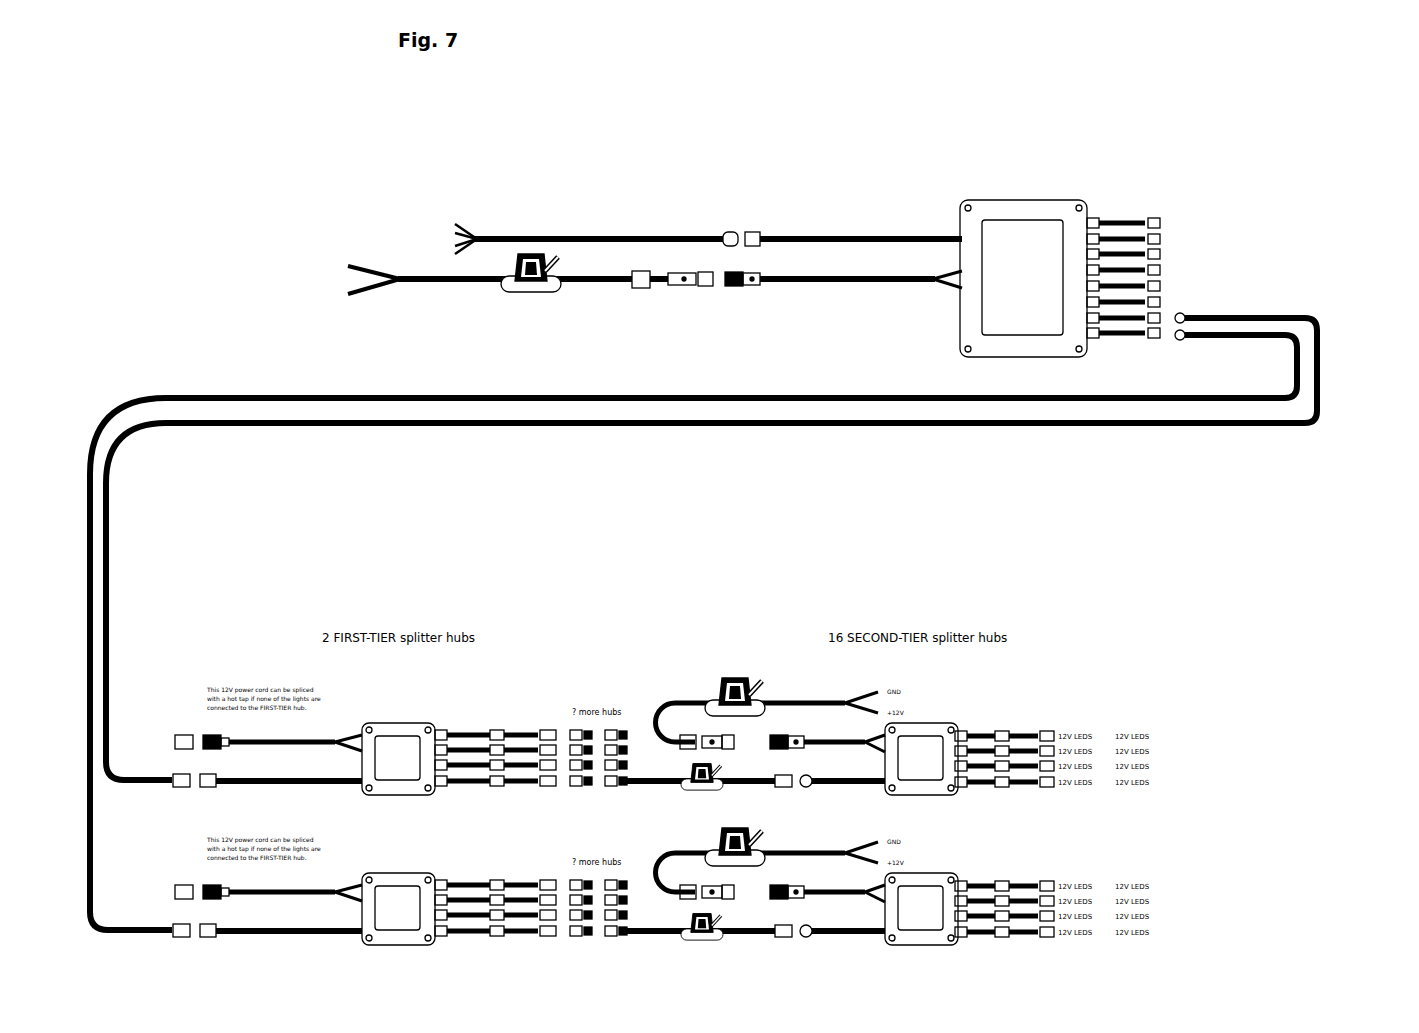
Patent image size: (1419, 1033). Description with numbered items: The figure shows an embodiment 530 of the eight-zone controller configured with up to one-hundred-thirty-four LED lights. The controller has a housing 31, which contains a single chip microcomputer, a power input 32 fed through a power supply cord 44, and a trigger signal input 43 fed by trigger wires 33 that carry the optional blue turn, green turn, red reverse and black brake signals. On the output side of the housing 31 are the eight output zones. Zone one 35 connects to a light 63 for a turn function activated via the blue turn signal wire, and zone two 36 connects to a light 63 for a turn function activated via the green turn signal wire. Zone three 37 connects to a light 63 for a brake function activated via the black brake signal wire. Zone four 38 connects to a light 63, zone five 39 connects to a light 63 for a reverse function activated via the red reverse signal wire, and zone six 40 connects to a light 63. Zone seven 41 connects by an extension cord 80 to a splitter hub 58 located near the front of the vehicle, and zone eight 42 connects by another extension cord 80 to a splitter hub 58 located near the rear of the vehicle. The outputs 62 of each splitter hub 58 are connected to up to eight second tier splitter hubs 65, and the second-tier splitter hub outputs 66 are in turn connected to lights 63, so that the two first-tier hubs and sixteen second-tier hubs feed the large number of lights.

The embodiment of the eight-zone controller 530 is at (862, 140).
The housing 31 is at (1023, 292).
The power input 32 is at (836, 292).
The trigger wires 33 is at (603, 218).
The trigger signal input 43 is at (847, 218).
The power supply cord 44 is at (515, 295).
The zone one 35 is at (1125, 216).
The zone two 36 is at (1222, 238).
The 12V LED zone output 37 is at (1222, 253).
The zone four 38 is at (1222, 272).
The zone five 39 is at (1222, 288).
The zone six 40 is at (1222, 304).
The zone seven 41 is at (1116, 326).
The zone eight 42 is at (1162, 340).
The extension cord 80 is at (1320, 402).
The splitter hub 58 is at (398, 834).
The outputs of the splitter hub 62 is at (494, 725).
The second tier splitter hub 65 is at (921, 834).
The second-tier splitter hub outputs 66 is at (1012, 725).
The light 63 is at (1123, 725).